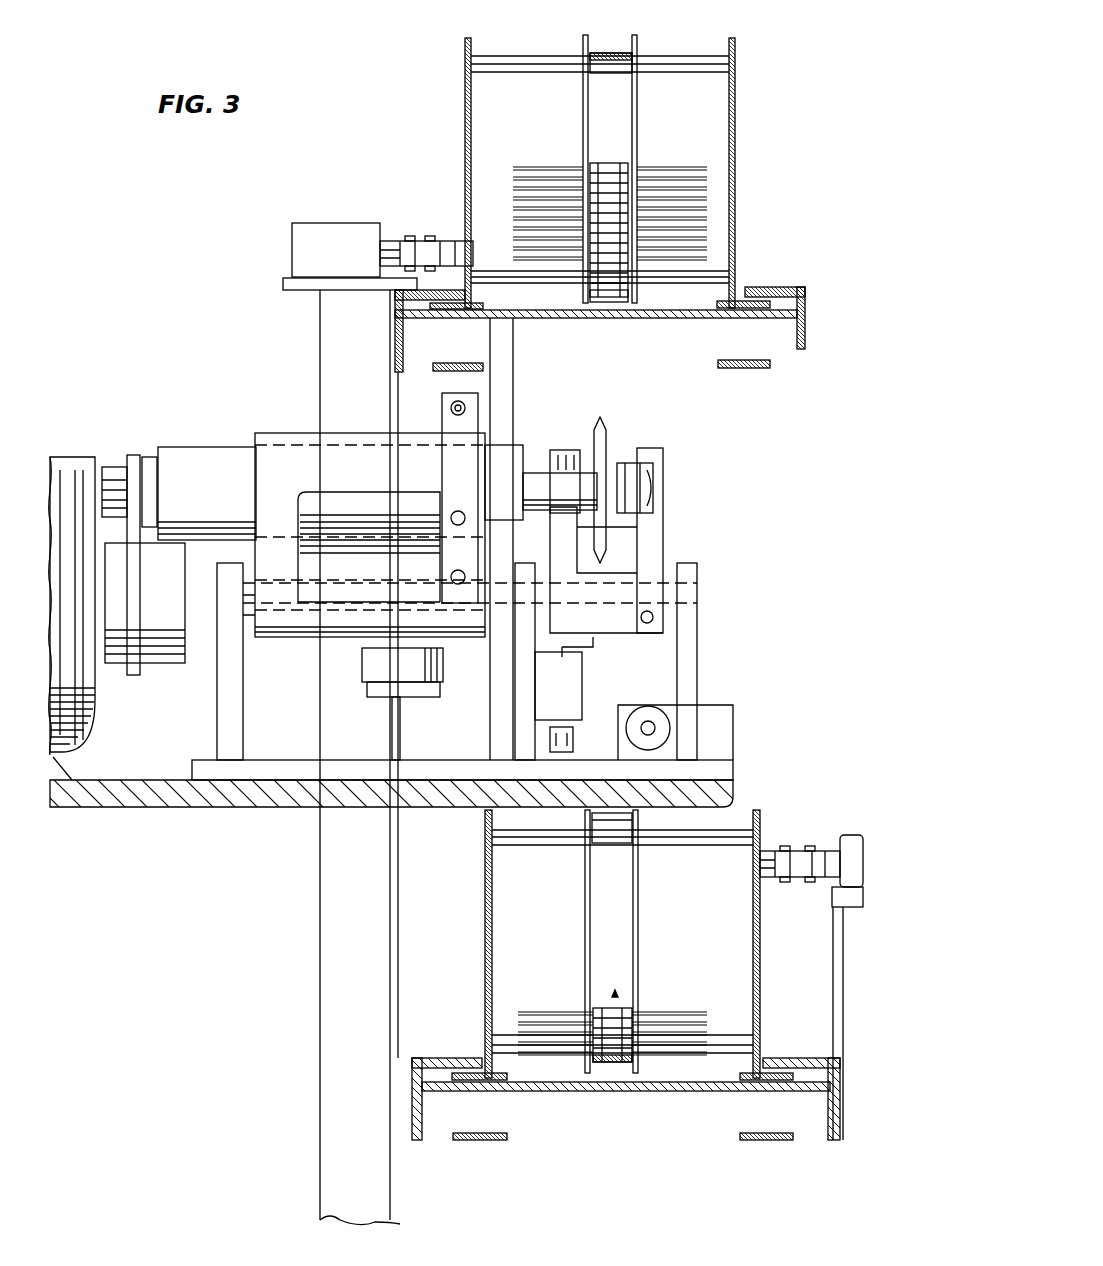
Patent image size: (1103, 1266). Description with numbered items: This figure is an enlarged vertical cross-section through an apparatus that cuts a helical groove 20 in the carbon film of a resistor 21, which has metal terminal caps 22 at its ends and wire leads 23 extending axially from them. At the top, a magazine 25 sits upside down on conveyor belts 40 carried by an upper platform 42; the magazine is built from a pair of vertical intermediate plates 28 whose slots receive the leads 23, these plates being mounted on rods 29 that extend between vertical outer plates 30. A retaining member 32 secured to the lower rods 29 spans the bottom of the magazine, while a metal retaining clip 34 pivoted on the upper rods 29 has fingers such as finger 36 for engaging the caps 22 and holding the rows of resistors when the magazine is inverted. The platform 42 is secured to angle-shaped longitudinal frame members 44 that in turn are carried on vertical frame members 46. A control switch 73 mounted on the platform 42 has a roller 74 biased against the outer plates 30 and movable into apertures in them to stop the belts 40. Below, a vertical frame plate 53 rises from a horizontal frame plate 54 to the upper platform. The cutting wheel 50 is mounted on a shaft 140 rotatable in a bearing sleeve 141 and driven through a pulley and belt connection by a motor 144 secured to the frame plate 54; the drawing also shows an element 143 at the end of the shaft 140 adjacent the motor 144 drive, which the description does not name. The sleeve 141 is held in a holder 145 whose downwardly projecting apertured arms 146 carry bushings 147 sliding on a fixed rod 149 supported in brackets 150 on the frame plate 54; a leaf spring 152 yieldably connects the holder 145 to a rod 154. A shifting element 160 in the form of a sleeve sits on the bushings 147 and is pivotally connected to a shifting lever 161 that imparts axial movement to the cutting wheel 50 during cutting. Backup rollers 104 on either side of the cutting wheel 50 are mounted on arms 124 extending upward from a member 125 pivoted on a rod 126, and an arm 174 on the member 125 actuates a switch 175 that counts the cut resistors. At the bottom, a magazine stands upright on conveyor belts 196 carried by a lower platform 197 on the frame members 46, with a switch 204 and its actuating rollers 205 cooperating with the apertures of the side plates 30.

The helical groove 20 is at (616, 993).
The resistor 21 is at (613, 190).
The metal terminal caps 22 is at (617, 1064).
The wire leads 23 is at (513, 188).
The magazine 25 is at (607, 556).
The intermediate plates 28 is at (589, 108).
The rods 29 is at (531, 62).
The outer plates 30 is at (466, 128).
The retaining member 32 is at (606, 52).
The metal retaining clip 34 is at (612, 832).
The finger 36 is at (611, 302).
The conveyor belts 40 is at (478, 322).
The upper platform 42 is at (681, 318).
The longitudinal frame members 44 is at (395, 326).
The vertical frame members 46 is at (320, 956).
The cutting wheel 50 is at (606, 438).
The vertical frame plate 53 is at (505, 378).
The horizontal frame plate 54 is at (225, 804).
The control switch 73 is at (332, 240).
The roller 74 is at (446, 250).
The backup rollers 104 is at (572, 460).
The arms 124 is at (652, 535).
The member 125 is at (636, 590).
The rod 126 is at (695, 582).
The shaft 140 is at (158, 480).
The bearing sleeve 141 is at (210, 455).
The hub 143 is at (125, 478).
The motor 144 is at (80, 690).
The holder 145 is at (370, 517).
The apertured arms 146 is at (268, 567).
The bushings 147 is at (281, 620).
The fixed rod 149 is at (247, 608).
The brackets 150 is at (240, 720).
The leaf spring 152 is at (460, 476).
The rod 154 is at (452, 408).
The shifting element 160 is at (350, 690).
The shifting lever 161 is at (380, 668).
The arm 174 is at (578, 650).
The switch 175 is at (566, 672).
The conveyor belts 196 is at (488, 1088).
The lower platform 197 is at (570, 1086).
The switch 204 is at (848, 845).
The actuating rollers 205 is at (778, 860).